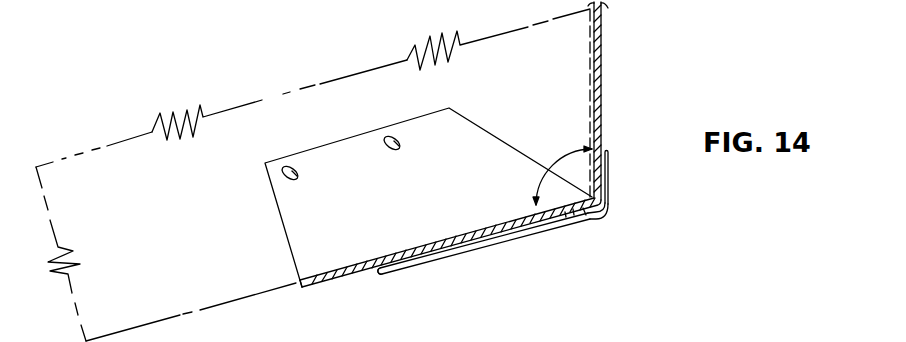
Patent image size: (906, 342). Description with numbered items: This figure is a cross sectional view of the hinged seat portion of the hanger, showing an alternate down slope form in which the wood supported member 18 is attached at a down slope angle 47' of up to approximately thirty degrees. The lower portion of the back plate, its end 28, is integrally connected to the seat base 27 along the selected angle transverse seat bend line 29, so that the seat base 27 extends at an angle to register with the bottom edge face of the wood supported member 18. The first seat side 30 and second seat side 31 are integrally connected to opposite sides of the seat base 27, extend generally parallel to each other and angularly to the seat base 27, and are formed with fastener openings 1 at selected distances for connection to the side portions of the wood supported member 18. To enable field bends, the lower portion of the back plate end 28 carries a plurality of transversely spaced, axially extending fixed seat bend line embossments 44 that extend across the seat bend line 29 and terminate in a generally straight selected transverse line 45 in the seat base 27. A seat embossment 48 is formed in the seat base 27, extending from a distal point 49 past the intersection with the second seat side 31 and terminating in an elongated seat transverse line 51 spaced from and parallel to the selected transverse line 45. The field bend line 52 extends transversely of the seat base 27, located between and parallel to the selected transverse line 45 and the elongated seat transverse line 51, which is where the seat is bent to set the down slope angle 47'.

The wood supported member 18 is at (264, 99).
The second seat side 31 is at (570, 4).
The first seat side 30 is at (337, 155).
The fastener openings 1 is at (297, 180).
The seat base 27 is at (397, 253).
The end of back plate 28 is at (603, 113).
The fixed seat bend line embossments 44 is at (608, 183).
The selected angle transverse seat bend line 29 is at (607, 213).
The seat embossment 48 is at (463, 245).
The distal point 49 is at (378, 272).
The selected transverse line 45 is at (583, 213).
The field bend line 52 is at (573, 213).
The elongated seat transverse line 51 is at (565, 217).
The down slope angle 47' is at (562, 150).